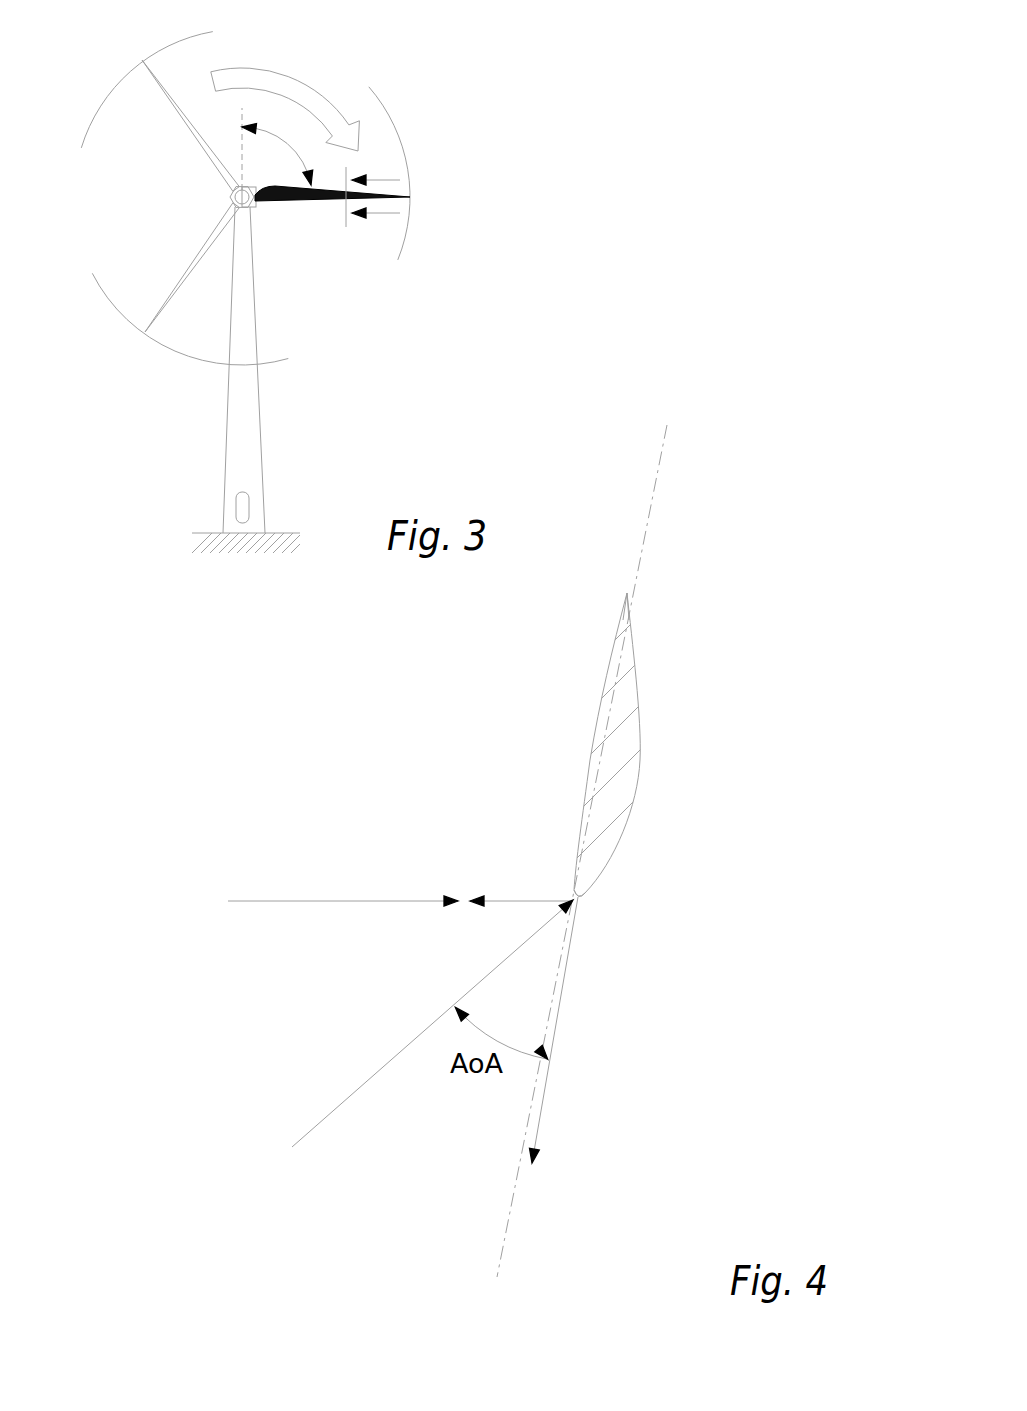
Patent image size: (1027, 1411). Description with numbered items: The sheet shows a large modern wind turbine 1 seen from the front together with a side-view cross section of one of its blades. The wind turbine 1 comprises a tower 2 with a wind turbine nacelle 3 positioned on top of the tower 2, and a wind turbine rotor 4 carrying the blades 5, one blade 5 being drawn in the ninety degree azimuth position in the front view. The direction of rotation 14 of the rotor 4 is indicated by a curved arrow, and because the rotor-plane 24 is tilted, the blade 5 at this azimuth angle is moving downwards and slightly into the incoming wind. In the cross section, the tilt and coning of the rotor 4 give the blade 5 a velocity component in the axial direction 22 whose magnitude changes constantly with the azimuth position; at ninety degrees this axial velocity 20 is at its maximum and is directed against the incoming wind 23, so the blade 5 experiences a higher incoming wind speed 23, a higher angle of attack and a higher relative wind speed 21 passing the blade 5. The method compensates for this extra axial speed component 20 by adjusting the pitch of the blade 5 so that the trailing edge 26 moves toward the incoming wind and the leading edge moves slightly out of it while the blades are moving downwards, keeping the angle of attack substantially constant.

In FIG. 3, the wind turbine 1 is at (245, 278).
In FIG. 3, the tower 2 is at (243, 303).
In FIG. 3, the wind turbine nacelle 3 is at (255, 205).
In FIG. 3, the wind turbine rotor 4 is at (228, 199).
In FIG. 3, the wind turbine blade 5 is at (167, 97).
In FIG. 4, the wind turbine blade 5 is at (617, 763).
In FIG. 3, the direction of rotation 14 is at (290, 92).
In FIG. 4, the axial velocity 20 is at (522, 901).
In FIG. 4, the relative wind speed 21 is at (340, 1107).
In FIG. 4, the axial direction 22 is at (542, 1105).
In FIG. 4, the incoming wind speed 23 is at (262, 901).
In FIG. 4, the rotor-plane 24 is at (510, 1213).
In FIG. 4, the trailing edge 26 is at (627, 594).